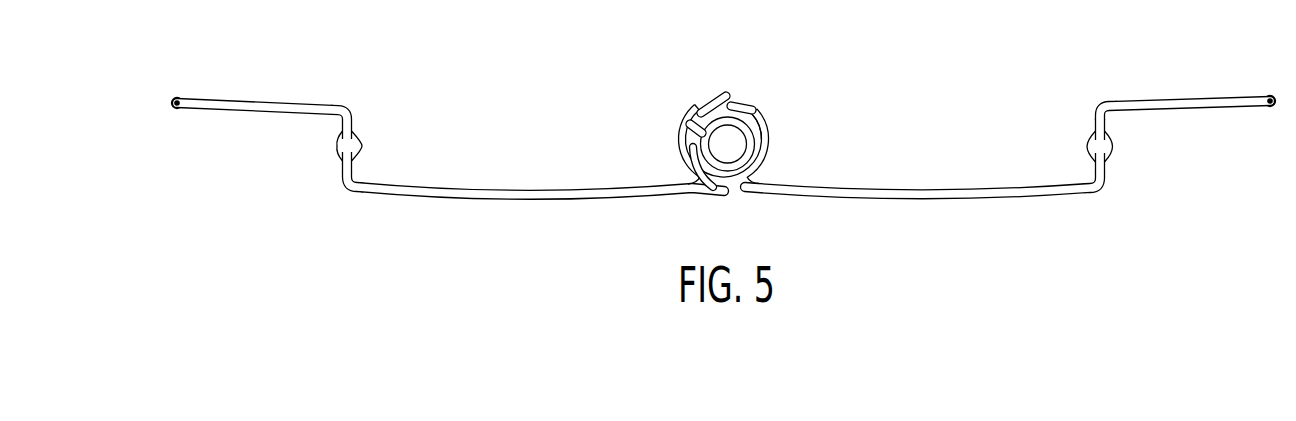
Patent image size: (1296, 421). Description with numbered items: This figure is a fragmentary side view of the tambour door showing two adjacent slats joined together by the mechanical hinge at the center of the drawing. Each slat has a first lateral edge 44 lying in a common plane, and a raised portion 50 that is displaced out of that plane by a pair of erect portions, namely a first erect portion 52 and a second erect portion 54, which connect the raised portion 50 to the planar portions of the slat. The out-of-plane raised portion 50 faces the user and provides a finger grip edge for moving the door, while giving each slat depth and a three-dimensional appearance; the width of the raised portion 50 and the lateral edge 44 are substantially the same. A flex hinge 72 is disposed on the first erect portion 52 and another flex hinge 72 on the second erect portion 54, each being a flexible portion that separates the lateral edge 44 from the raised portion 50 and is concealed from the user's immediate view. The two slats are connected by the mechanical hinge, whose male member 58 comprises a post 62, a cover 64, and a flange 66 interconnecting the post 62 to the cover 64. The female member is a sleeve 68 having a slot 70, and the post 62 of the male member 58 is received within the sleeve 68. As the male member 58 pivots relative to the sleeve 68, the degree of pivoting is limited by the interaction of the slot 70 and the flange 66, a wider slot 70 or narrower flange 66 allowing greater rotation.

The first lateral edge 44 is at (462, 199).
The raised portion 50 is at (247, 97).
The first erect portion 52 is at (1096, 111).
The second erect portion 54 is at (345, 183).
The male member 58 is at (713, 95).
The post 62 is at (743, 124).
The cover 64 is at (677, 146).
The flange 66 is at (703, 107).
The sleeve 68 is at (763, 155).
The slot 70 is at (688, 124).
The flex hinge 72 is at (366, 145).